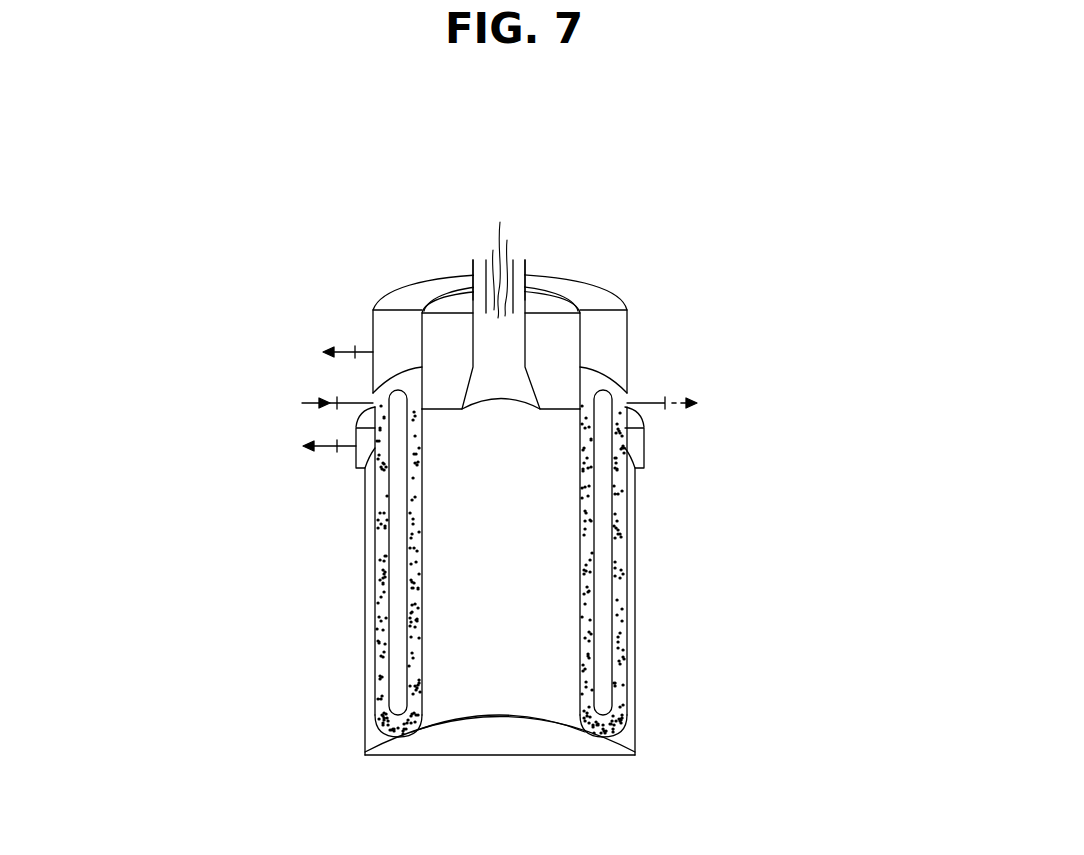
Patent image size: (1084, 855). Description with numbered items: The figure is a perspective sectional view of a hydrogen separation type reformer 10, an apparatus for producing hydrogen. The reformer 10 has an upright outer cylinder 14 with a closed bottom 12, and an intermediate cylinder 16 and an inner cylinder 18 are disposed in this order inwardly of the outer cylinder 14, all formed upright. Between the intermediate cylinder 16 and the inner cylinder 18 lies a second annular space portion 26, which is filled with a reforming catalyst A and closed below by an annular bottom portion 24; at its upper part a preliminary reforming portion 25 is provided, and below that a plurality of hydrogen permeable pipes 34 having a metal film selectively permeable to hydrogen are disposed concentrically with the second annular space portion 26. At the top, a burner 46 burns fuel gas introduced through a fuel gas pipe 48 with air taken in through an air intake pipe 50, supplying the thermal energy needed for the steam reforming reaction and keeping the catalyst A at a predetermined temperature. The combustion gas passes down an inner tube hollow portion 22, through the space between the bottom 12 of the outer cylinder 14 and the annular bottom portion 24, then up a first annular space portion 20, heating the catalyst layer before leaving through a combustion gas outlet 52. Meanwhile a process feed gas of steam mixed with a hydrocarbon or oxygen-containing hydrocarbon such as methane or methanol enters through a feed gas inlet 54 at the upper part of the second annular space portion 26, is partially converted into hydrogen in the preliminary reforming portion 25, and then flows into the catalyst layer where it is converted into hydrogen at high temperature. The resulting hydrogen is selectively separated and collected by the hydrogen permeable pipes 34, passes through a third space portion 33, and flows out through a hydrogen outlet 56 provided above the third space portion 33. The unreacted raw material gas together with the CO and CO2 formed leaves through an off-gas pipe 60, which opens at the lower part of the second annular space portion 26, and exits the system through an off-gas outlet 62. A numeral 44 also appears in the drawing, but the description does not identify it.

The hydrogen separation type reformer 10 is at (633, 306).
The closed bottom 12 is at (463, 757).
The outer cylinder 14 is at (365, 552).
The intermediate cylinder 16 is at (375, 568).
The inner cylinder 18 is at (422, 547).
The first annular space portion 20 is at (370, 662).
The inner tube hollow portion 22 is at (518, 670).
The annular bottom portion 24 is at (398, 743).
The preliminary reforming portion 25 is at (422, 412).
The second annular space portion 26 is at (375, 602).
The third space portion 33 is at (398, 497).
The hydrogen permeable pipe 34 is at (603, 523).
The burner housing 44 is at (547, 325).
The burner 46 is at (503, 262).
The fuel gas pipe 48 is at (473, 267).
The air intake pipe 50 is at (527, 277).
The combustion gas outlet 52 is at (337, 446).
The feed gas inlet 54 is at (338, 403).
The hydrogen outlet 56 is at (366, 348).
The off-gas pipe 60 is at (620, 718).
The off-gas outlet 62 is at (647, 402).
The reforming catalyst A is at (381, 600).